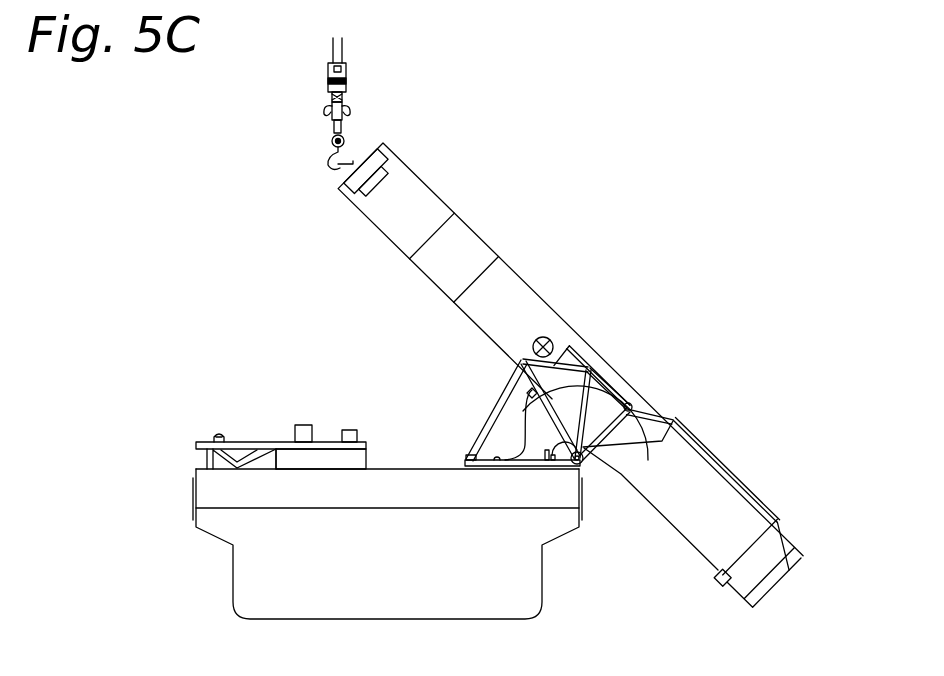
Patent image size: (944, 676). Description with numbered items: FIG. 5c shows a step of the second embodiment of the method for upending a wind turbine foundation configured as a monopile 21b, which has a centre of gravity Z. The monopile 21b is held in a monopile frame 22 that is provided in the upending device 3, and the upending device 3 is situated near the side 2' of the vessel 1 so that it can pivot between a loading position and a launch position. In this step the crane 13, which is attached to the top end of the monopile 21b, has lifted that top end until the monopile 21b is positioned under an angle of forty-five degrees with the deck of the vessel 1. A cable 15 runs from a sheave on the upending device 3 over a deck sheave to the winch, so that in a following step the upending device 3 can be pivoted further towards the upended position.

The vessel 1 is at (262, 555).
The side of the vessel 2' is at (420, 489).
The upending device 3 is at (534, 412).
The crane 13 is at (346, 86).
The cable 15 is at (478, 441).
The monopile 21b is at (498, 257).
The monopile frame 22 is at (730, 470).
The centre of gravity Z is at (543, 337).